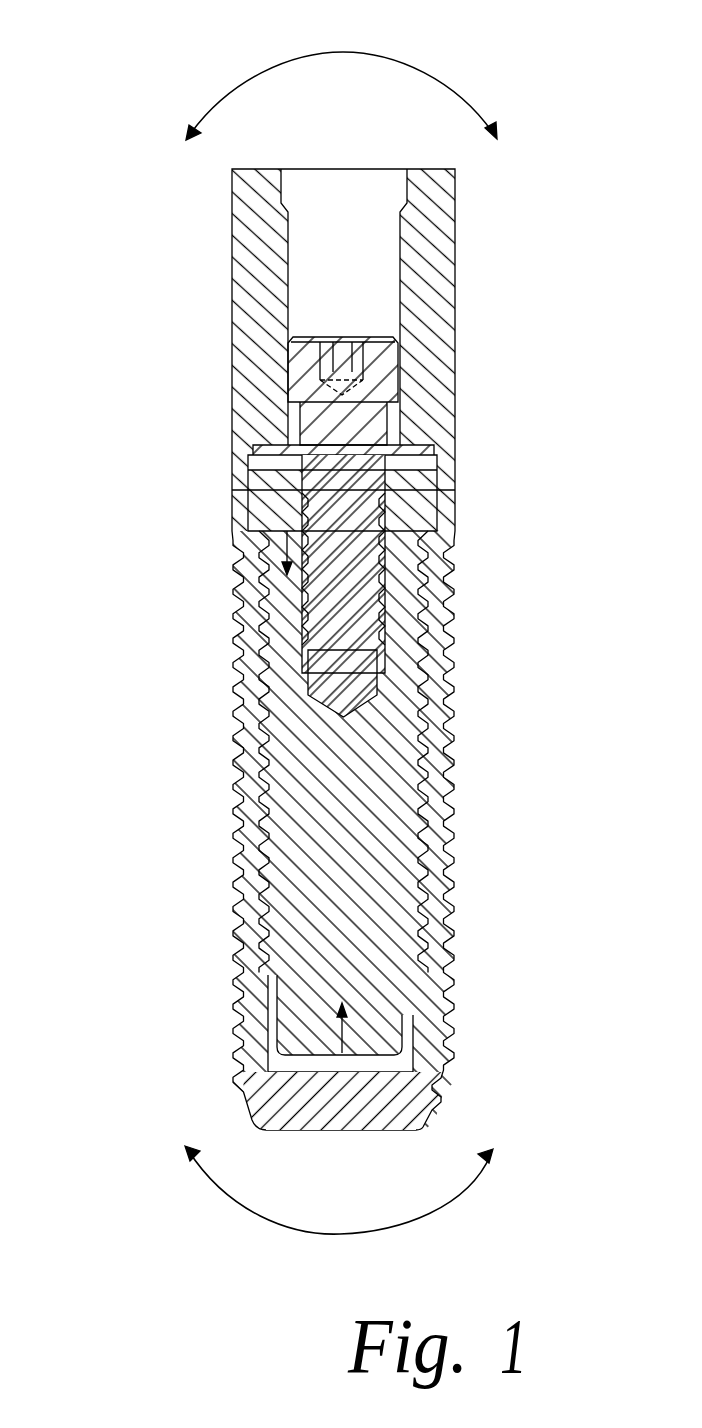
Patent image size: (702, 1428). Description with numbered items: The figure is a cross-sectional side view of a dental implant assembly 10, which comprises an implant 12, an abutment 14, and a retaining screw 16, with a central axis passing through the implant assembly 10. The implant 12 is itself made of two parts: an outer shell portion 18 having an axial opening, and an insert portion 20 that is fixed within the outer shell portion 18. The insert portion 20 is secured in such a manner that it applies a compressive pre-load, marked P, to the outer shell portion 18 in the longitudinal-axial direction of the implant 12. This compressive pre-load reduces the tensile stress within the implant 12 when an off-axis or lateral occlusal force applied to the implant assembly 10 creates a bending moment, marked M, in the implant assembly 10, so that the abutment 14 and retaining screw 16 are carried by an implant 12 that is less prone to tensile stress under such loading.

The dental implant assembly 10 is at (315, 648).
The implant 12 is at (478, 780).
The abutment 14 is at (395, 396).
The retaining screw 16 is at (398, 380).
The outer shell portion 18 is at (442, 822).
The insert portion 20 is at (398, 898).